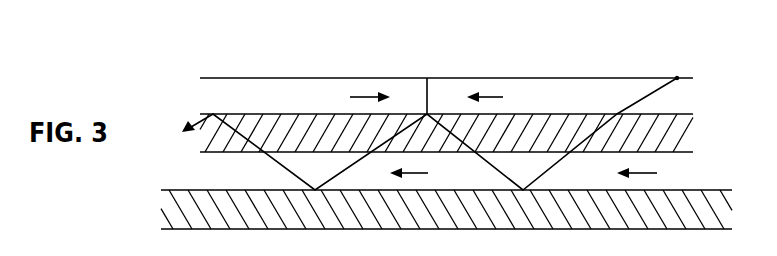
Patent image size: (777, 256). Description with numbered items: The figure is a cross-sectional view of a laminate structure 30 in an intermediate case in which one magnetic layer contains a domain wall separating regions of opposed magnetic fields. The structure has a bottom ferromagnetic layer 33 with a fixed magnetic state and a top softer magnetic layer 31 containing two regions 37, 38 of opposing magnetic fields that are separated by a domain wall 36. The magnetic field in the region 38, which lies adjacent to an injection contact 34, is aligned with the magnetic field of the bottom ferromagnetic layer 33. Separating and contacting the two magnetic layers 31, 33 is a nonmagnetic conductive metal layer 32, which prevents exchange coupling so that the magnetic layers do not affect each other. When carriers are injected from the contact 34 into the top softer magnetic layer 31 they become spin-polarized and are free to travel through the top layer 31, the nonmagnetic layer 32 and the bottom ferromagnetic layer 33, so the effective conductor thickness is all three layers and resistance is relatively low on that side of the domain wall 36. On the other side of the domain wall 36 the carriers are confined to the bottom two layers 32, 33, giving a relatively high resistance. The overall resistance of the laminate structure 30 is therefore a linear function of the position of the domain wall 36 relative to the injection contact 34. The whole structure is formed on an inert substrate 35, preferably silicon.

The laminate structure 30 is at (255, 65).
The top softer magnetic layer 31 is at (255, 108).
The nonmagnetic conductive metal layer 32 is at (331, 144).
The bottom ferromagnetic layer 33 is at (255, 182).
The injection contact 34 is at (677, 78).
The inert substrate 35 is at (331, 220).
The domain wall 36 is at (427, 93).
The region of the top magnetic layer 37 is at (331, 108).
The region adjacent to the injection contact 38 is at (554, 108).